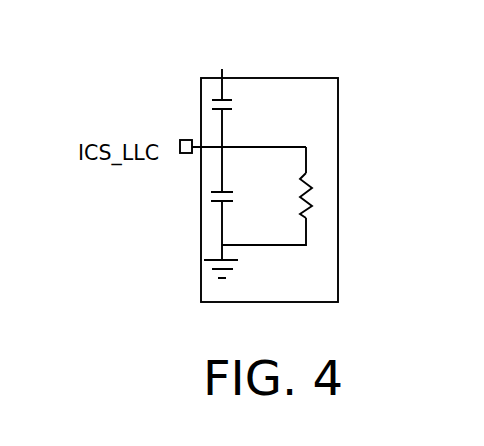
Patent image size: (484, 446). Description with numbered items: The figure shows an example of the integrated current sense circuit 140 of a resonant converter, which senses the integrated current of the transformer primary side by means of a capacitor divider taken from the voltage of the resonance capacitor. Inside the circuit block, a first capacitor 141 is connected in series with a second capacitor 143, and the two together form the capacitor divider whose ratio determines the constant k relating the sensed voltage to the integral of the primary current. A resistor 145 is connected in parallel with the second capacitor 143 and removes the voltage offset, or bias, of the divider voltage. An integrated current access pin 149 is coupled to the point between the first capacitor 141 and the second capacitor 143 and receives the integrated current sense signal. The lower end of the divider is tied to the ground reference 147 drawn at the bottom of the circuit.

The integrated current sense circuit 140 is at (310, 77).
The first capacitor 141 is at (230, 100).
The second capacitor 143 is at (214, 195).
The resistor 145 is at (308, 173).
The ground 147 is at (213, 269).
The integrated current access pin 149 is at (180, 140).